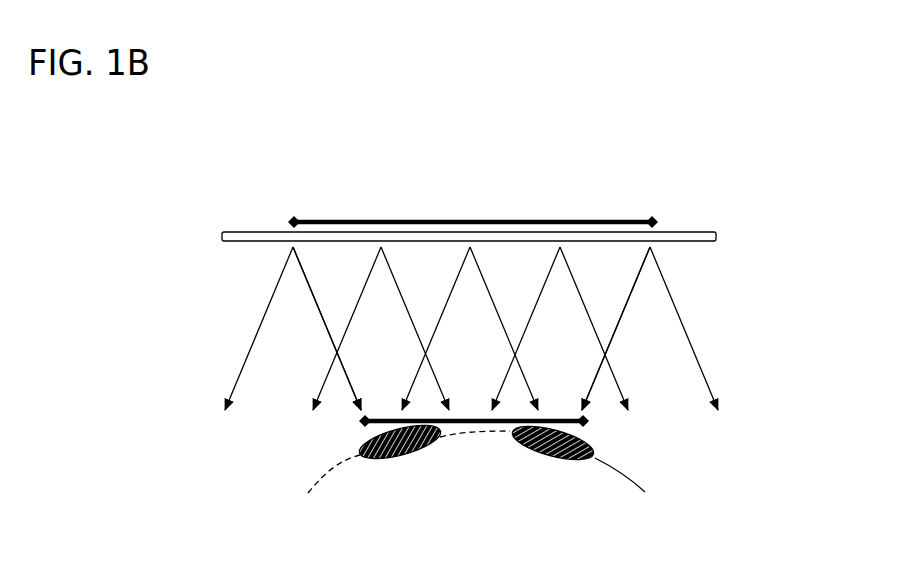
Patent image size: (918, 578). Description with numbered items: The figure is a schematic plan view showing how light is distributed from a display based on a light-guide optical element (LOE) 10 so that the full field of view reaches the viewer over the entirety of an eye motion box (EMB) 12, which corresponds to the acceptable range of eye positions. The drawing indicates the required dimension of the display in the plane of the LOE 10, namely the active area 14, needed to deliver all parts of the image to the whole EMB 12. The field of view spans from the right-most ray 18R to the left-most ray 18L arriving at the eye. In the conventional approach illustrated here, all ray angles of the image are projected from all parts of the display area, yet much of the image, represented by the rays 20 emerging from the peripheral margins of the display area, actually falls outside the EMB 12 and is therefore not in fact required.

The light-guide optical element 10 is at (222, 236).
The active area 14 is at (447, 220).
The rays 20 is at (266, 308).
The left-most ray 18L is at (325, 323).
The right-most ray 18R is at (623, 310).
The eye motion box 12 is at (365, 422).